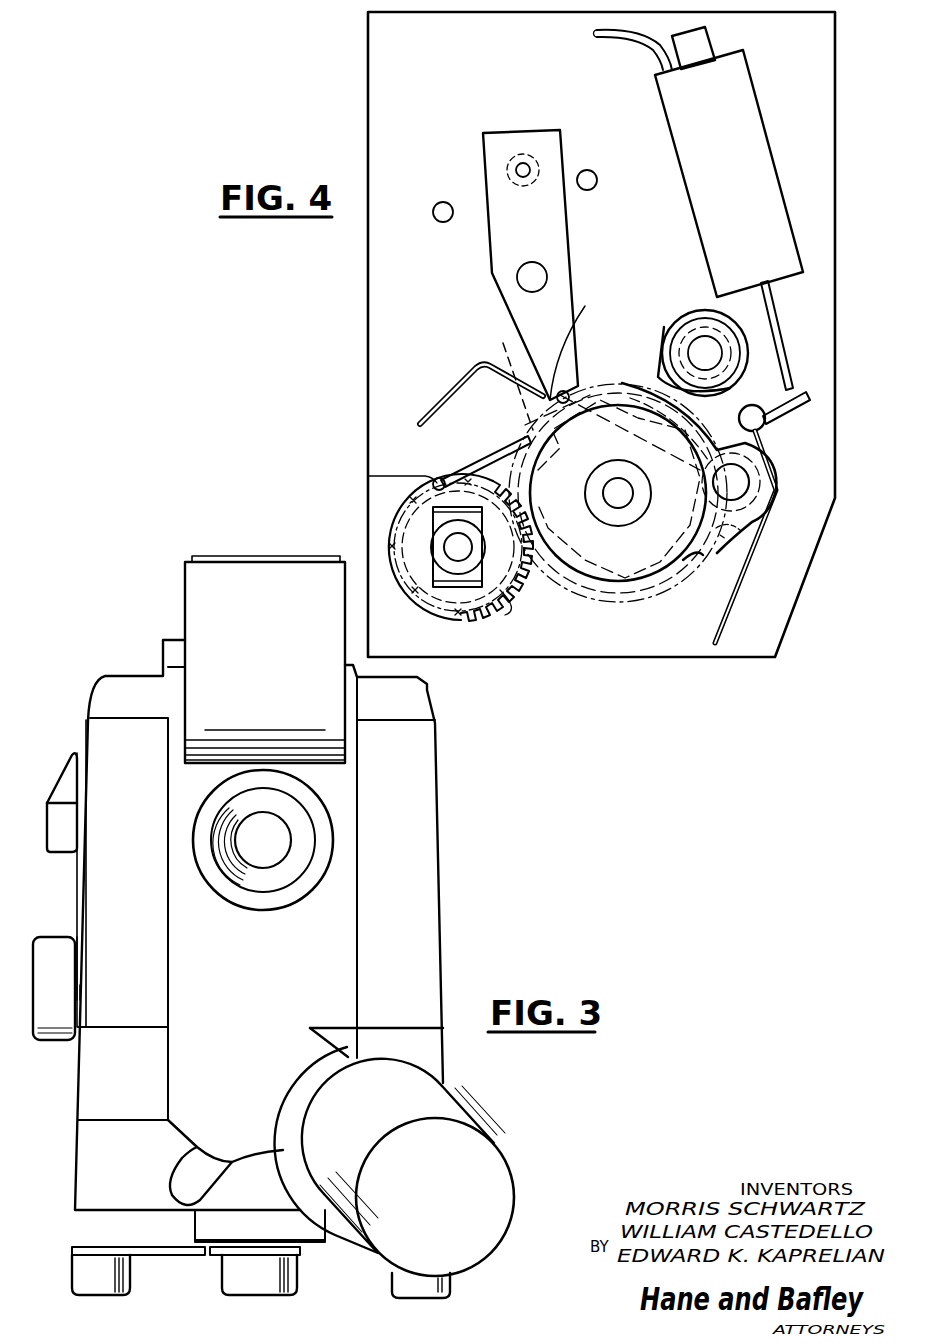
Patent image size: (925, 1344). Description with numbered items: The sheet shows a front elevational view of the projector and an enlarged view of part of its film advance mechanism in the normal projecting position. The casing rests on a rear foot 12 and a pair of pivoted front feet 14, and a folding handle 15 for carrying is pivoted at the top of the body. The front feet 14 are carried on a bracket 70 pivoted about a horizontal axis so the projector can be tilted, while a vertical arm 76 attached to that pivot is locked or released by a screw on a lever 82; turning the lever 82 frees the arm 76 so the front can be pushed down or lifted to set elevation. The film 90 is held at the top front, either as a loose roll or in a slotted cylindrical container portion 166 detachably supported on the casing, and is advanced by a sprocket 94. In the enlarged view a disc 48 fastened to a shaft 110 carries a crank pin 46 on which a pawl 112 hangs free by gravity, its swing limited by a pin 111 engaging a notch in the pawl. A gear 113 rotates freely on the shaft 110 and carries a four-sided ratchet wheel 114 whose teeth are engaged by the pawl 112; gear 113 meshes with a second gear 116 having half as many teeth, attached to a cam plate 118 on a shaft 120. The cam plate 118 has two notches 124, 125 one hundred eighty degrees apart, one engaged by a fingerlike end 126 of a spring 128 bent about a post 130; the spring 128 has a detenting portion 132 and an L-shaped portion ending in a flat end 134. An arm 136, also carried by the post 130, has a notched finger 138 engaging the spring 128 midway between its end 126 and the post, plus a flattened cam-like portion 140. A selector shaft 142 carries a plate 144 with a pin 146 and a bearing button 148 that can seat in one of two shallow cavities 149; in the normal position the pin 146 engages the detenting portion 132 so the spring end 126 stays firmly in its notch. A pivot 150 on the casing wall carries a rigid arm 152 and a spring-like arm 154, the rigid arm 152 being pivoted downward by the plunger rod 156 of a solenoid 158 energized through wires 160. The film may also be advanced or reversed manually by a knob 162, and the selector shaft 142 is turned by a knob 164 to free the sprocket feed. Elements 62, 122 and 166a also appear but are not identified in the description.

In FIG. 3, the rear foot 12 is at (235, 1277).
In FIG. 3, the front feet 14 is at (88, 1272).
In FIG. 3, the folding handle 15 is at (432, 688).
In FIG. 4, the crank pin 46 is at (748, 478).
In FIG. 4, the disc 48 is at (660, 568).
In FIG. 3, the lens 62 is at (322, 858).
In FIG. 3, the bracket 70 is at (215, 1250).
In FIG. 3, the vertical arm 76 is at (294, 1232).
In FIG. 3, the lever 82 is at (182, 1172).
In FIG. 3, the film 90 is at (228, 557).
In FIG. 4, the sprocket 94 is at (420, 598).
In FIG. 4, the shaft 110 is at (618, 497).
In FIG. 3, the shaft 110 is at (77, 935).
In FIG. 4, the pin 111 is at (748, 545).
In FIG. 4, the pawl 112 is at (778, 500).
In FIG. 4, the gear 113 is at (642, 595).
In FIG. 4, the ratchet wheel 114 is at (612, 590).
In FIG. 4, the second gear 116 is at (412, 525).
In FIG. 4, the cam plate 118 is at (392, 553).
In FIG. 4, the shaft 120 is at (466, 552).
In FIG. 4, the slide block 122 is at (452, 580).
In FIG. 4, the notch 124 is at (492, 598).
In FIG. 4, the notch 125 is at (368, 476).
In FIG. 4, the fingerlike end 126 is at (437, 479).
In FIG. 4, the spring 128 is at (490, 455).
In FIG. 4, the post 130 is at (720, 355).
In FIG. 4, the detenting portion 132 is at (585, 340).
In FIG. 4, the flat end 134 is at (440, 402).
In FIG. 4, the arm 136 is at (730, 388).
In FIG. 4, the notched finger 138 is at (505, 352).
In FIG. 4, the flattened cam-like portion 140 is at (662, 333).
In FIG. 4, the selector shaft 142 is at (512, 283).
In FIG. 3, the selector shaft 142 is at (77, 857).
In FIG. 4, the plate 144 is at (498, 190).
In FIG. 4, the pin 146 is at (565, 380).
In FIG. 4, the bearing button 148 is at (537, 162).
In FIG. 4, the shallow cavities 149 is at (438, 221).
In FIG. 4, the pivot 150 is at (768, 425).
In FIG. 4, the rigid arm 152 is at (790, 410).
In FIG. 4, the spring-like arm 154 is at (715, 622).
In FIG. 4, the plunger rod 156 is at (770, 310).
In FIG. 4, the solenoid 158 is at (755, 160).
In FIG. 4, the wires 160 is at (618, 38).
In FIG. 3, the knob 162 is at (33, 1043).
In FIG. 3, the knob 164 is at (63, 780).
In FIG. 3, the container portion 166 is at (205, 592).
In FIG. 3, the film roll 166a is at (455, 1110).